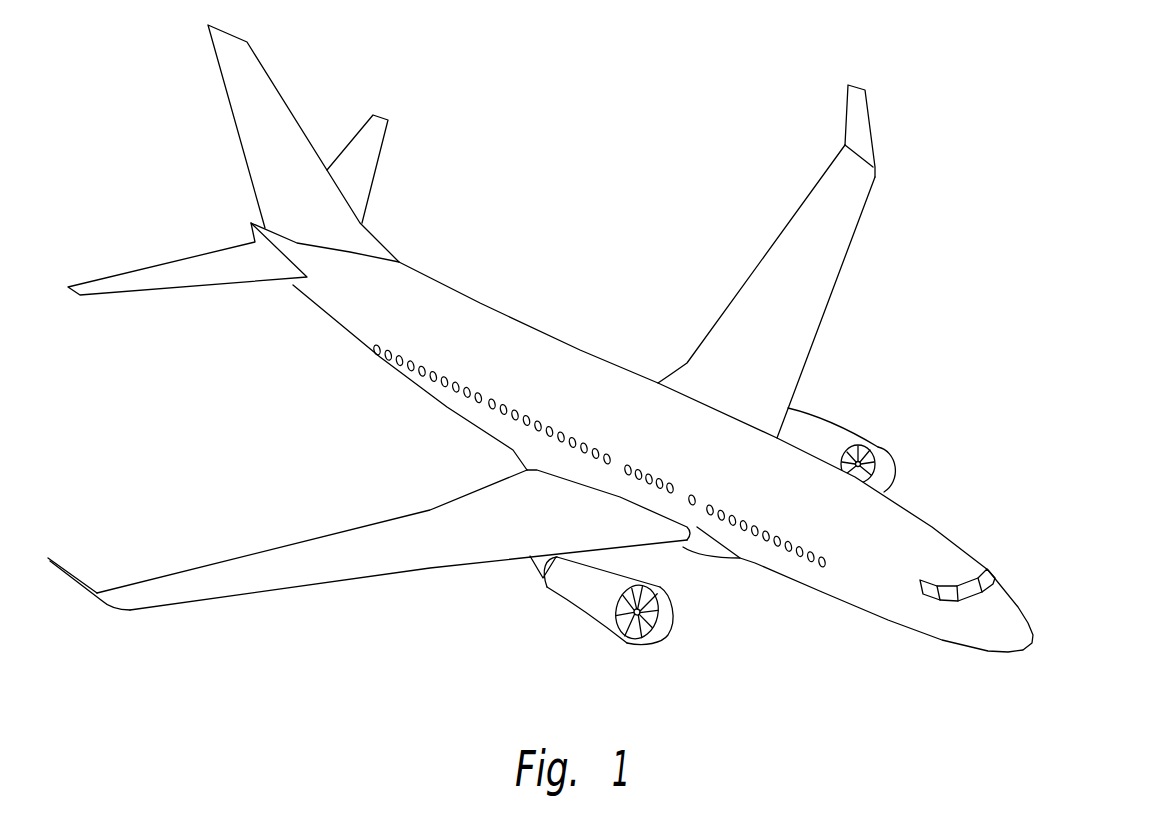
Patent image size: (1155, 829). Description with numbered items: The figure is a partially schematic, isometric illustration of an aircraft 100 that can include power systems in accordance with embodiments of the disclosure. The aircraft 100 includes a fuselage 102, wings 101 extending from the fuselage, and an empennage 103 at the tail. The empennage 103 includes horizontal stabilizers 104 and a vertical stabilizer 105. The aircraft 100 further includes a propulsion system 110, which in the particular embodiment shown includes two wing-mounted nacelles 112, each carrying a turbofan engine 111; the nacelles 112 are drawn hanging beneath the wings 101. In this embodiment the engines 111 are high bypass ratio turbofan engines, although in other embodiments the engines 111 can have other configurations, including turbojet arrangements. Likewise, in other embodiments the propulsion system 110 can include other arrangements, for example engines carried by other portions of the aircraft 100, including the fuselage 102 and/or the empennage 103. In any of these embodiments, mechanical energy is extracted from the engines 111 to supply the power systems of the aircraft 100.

The aircraft 100 is at (1000, 339).
The wings 101 is at (828, 252).
The fuselage 102 is at (930, 528).
The empennage 103 is at (418, 229).
The horizontal stabilizers 104 is at (377, 145).
The vertical stabilizer 105 is at (273, 106).
The propulsion system 110 is at (699, 636).
The turbofan engine 111 is at (648, 632).
The nacelle 112 is at (573, 597).